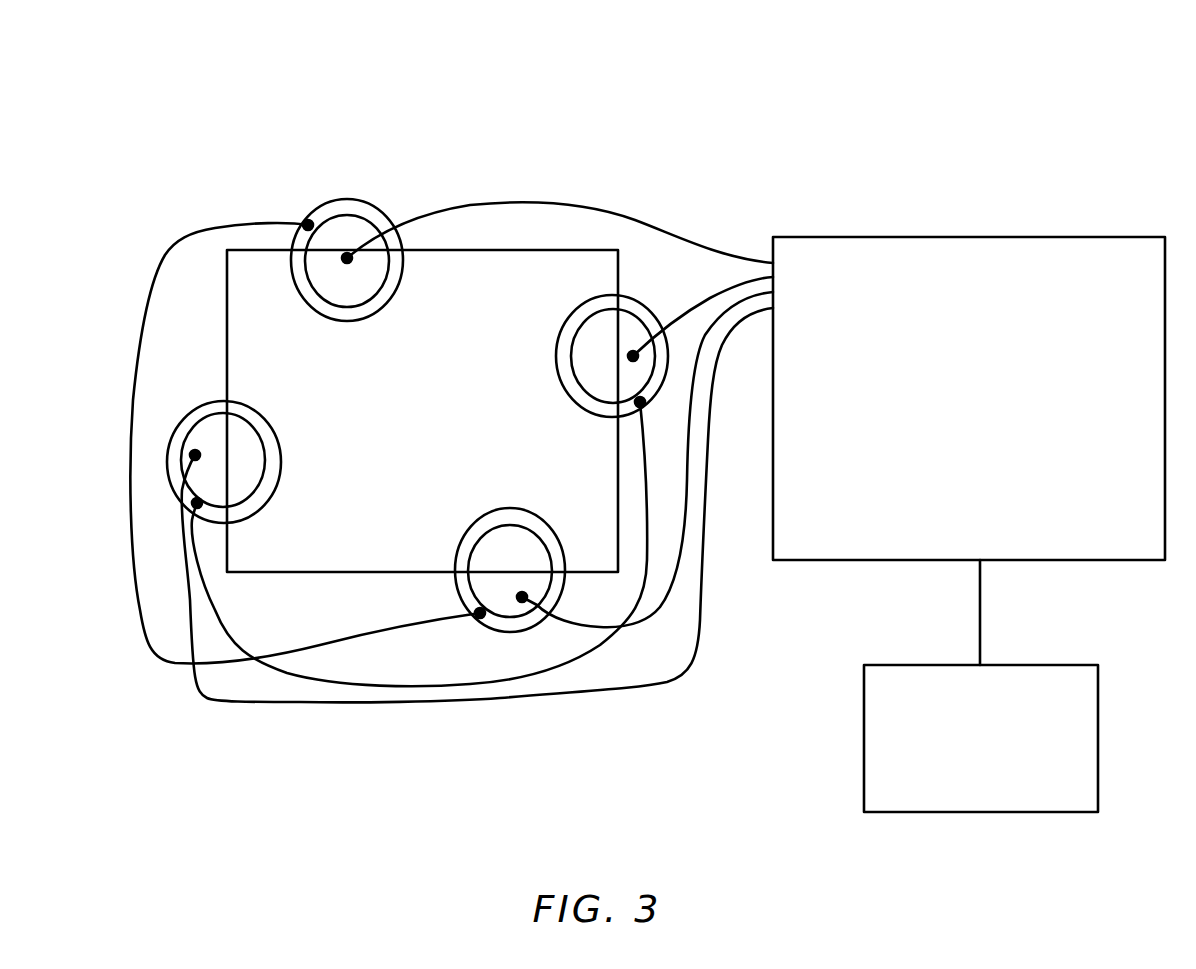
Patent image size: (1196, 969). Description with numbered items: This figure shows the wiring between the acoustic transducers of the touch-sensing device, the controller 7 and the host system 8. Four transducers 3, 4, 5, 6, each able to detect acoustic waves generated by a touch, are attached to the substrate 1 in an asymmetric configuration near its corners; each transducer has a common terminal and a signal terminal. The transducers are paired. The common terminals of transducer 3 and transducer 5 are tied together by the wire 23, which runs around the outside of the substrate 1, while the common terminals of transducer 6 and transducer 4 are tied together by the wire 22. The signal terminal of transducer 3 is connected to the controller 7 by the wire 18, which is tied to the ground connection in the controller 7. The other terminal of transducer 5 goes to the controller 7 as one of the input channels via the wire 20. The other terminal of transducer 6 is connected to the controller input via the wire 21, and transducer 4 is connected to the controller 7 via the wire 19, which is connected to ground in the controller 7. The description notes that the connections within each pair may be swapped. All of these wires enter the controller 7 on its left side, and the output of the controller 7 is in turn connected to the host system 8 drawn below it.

The substrate 1 is at (495, 290).
The transducer 3 is at (335, 207).
The transducer 4 is at (600, 305).
The transducer 5 is at (518, 623).
The transducer 6 is at (200, 410).
The controller 7 is at (969, 451).
The host system 8 is at (1078, 702).
The wire 18 is at (528, 200).
The wire 19 is at (675, 302).
The wire 20 is at (695, 353).
The wire 21 is at (722, 385).
The wire 22 is at (650, 472).
The wire 23 is at (135, 617).